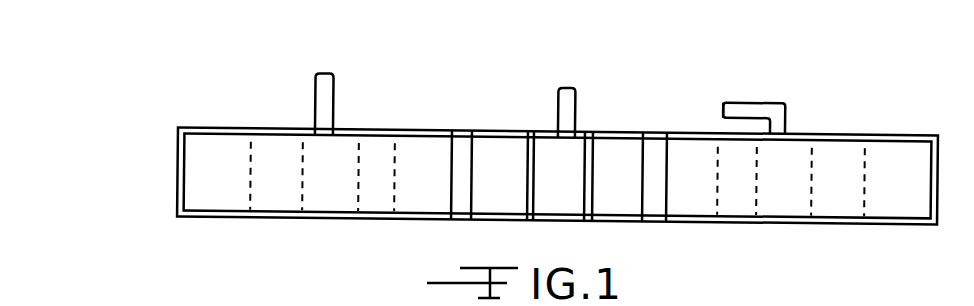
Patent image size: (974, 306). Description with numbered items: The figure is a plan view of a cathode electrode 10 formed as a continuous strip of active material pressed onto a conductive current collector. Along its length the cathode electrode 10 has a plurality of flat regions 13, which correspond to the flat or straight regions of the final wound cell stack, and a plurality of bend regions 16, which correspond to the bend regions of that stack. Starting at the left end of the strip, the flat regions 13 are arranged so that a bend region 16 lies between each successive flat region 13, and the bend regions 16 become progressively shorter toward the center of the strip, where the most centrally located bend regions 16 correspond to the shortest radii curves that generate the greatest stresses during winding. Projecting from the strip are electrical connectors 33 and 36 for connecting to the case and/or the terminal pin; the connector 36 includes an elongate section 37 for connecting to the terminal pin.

The cathode electrode 10 is at (513, 146).
The flat regions 13 is at (325, 217).
The bend regions 16 is at (590, 232).
The electrical connector 33 is at (320, 80).
The electrical connector 36 is at (740, 87).
The elongate section 37 is at (722, 118).